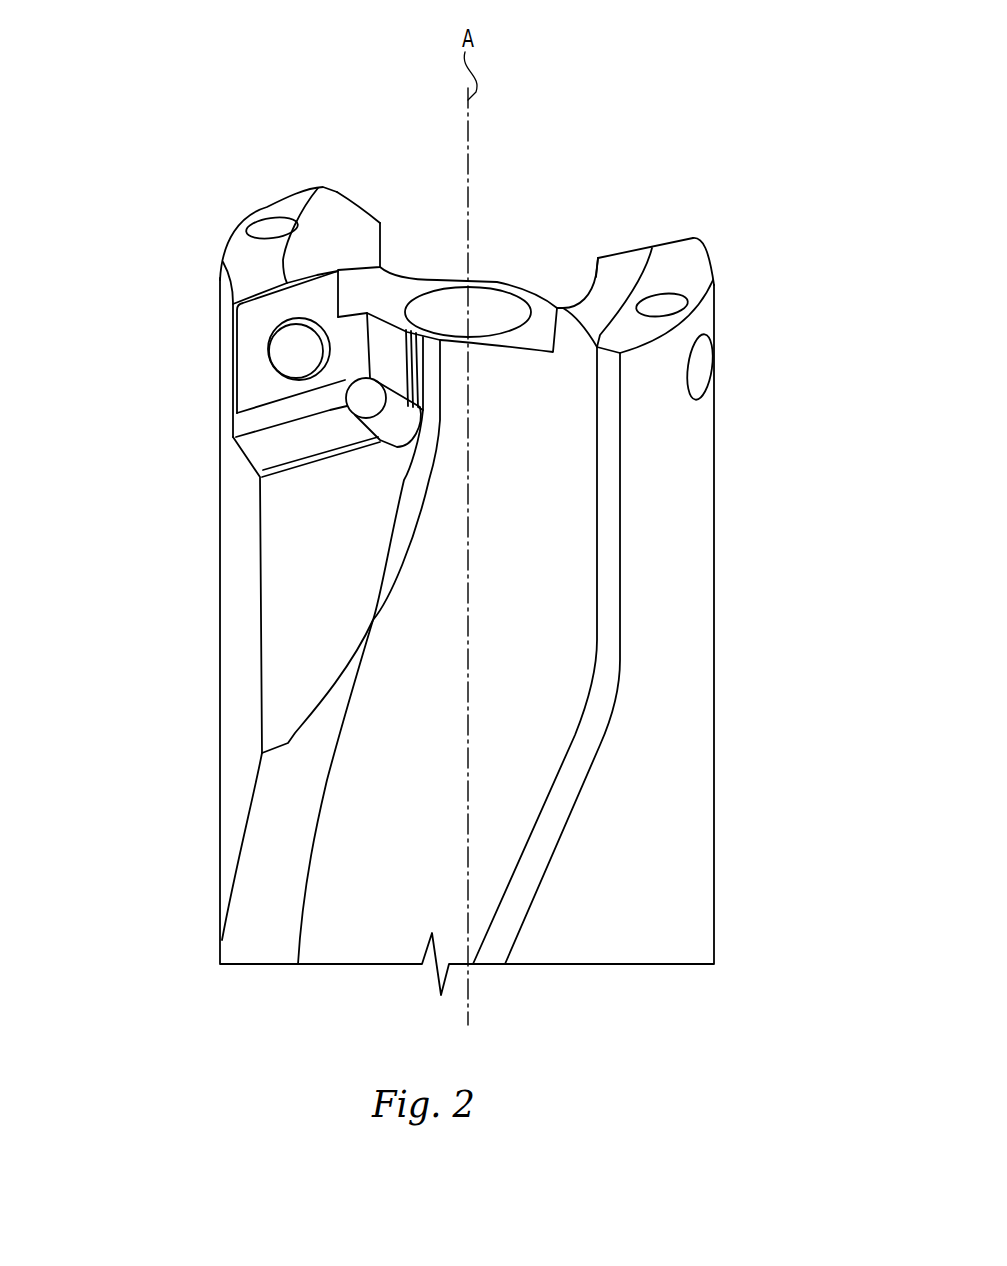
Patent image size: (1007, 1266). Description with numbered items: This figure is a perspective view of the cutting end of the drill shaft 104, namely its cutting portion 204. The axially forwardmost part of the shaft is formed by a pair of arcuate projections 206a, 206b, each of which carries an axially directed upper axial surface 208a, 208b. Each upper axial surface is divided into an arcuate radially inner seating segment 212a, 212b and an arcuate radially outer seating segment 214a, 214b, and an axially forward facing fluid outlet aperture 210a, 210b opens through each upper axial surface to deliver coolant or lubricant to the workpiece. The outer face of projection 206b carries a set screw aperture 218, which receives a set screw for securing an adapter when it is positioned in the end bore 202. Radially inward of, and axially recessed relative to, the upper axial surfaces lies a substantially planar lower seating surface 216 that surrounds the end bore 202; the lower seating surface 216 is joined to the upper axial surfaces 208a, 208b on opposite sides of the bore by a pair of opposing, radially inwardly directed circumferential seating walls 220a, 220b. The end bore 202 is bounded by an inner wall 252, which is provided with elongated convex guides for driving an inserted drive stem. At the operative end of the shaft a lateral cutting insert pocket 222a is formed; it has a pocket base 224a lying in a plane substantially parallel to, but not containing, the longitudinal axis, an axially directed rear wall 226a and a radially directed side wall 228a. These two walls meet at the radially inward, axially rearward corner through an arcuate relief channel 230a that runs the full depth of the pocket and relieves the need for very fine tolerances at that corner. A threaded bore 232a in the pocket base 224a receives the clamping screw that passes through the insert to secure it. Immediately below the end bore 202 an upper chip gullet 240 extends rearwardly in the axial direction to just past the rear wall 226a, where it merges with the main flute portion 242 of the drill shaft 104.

The drill shaft 104 is at (198, 531).
The end bore 202 is at (490, 297).
The cutting portion 204 is at (577, 135).
The arcuate projection 206a is at (288, 173).
The arcuate projection 206b is at (729, 229).
The upper axial surface 208a is at (372, 76).
The upper axial surface 208b is at (705, 171).
The fluid outlet aperture 210a is at (273, 227).
The fluid outlet aperture 210b is at (668, 308).
The radially inner seating segment 212a is at (353, 220).
The radially inner seating segment 212b is at (630, 270).
The radially outer seating segment 214a is at (318, 200).
The radially outer seating segment 214b is at (677, 263).
The lower seating surface 216 is at (397, 293).
The set screw aperture 218 is at (700, 365).
The circumferential seating wall 220a is at (363, 250).
The circumferential seating wall 220b is at (579, 273).
The lateral cutting insert pocket 222a is at (239, 326).
The pocket base 224a is at (247, 381).
The rear wall 226a is at (288, 455).
The side wall 228a is at (390, 368).
The relief channel 230a is at (390, 428).
The threaded bore 232a is at (270, 352).
The upper chip gullet 240 is at (430, 572).
The main flute portion 242 is at (380, 812).
The inner wall 252 is at (513, 307).